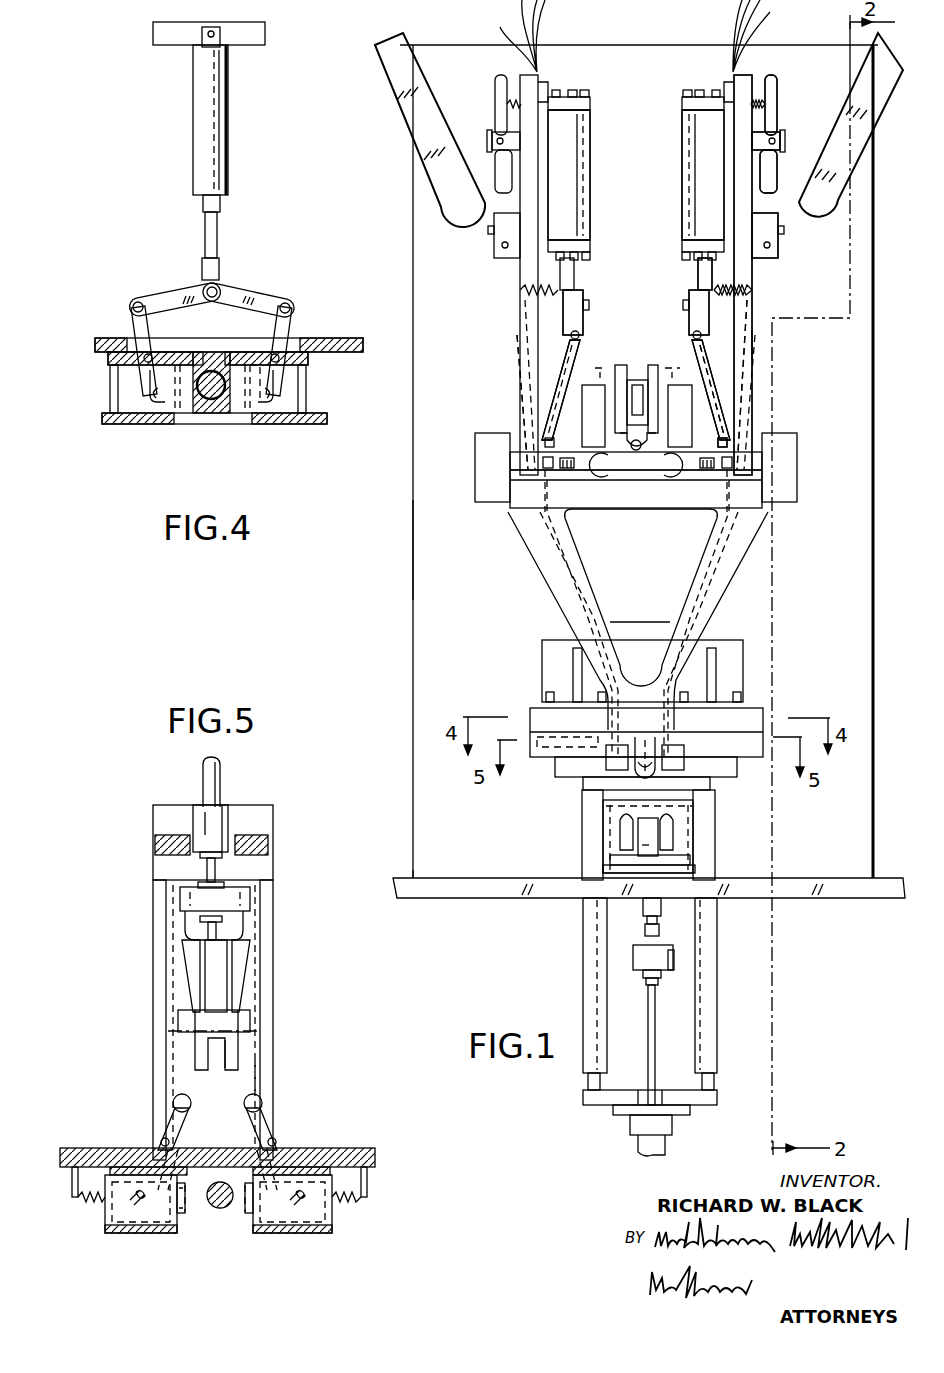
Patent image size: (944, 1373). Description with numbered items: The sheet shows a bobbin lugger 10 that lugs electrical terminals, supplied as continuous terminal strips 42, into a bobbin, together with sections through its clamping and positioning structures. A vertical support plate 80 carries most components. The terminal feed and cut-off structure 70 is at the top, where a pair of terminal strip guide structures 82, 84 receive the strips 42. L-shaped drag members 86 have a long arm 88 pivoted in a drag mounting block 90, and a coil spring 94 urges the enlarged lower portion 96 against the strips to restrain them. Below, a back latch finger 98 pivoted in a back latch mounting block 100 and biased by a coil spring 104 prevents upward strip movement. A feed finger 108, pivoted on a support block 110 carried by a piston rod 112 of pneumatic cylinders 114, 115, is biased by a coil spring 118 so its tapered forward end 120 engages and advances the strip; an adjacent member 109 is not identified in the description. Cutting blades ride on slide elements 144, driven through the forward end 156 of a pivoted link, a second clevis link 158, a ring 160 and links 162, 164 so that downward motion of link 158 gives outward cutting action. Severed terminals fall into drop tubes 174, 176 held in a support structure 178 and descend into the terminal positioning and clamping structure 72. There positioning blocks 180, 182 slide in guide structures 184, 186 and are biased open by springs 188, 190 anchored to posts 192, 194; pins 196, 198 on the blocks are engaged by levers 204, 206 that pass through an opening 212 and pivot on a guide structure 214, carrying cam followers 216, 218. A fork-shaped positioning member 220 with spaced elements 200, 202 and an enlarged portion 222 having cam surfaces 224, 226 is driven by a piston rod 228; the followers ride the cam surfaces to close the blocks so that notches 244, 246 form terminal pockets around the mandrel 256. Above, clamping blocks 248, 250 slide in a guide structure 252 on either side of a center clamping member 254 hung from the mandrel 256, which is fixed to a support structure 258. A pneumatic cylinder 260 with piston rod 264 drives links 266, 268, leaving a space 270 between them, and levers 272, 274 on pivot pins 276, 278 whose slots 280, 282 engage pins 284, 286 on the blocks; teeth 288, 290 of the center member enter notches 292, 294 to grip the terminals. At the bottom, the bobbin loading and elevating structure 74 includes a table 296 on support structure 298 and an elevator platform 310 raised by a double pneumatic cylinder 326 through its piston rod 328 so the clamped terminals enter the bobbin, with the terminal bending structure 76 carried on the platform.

In FIG. 1, the bobbin lugger 10 is at (472, 958).
In FIG. 1, the terminal strip 42 is at (532, 24).
In FIG. 1, the terminal feed and cut-off structure 70 is at (518, 408).
In FIG. 1, the terminal positioning and clamping structure 72 is at (538, 700).
In FIG. 1, the bobbin loading and elevating structure 74 is at (718, 870).
In FIG. 1, the terminal bending structure 76 is at (680, 818).
In FIG. 1, the vertical support plate 80 is at (420, 558).
In FIG. 1, the terminal strip guide structure 82 is at (520, 335).
In FIG. 1, the terminal strip guide structure 84 is at (760, 343).
In FIG. 1, the terminal drag member 86 is at (782, 98).
In FIG. 1, the long arm 88 is at (778, 122).
In FIG. 1, the drag mounting block 90 is at (780, 148).
In FIG. 1, the coil spring 94 is at (760, 100).
In FIG. 1, the enlarged lower portion 96 is at (745, 183).
In FIG. 1, the back latch finger 98 is at (762, 278).
In FIG. 1, the back latch mounting block 100 is at (780, 242).
In FIG. 1, the coil spring 104 is at (762, 304).
In FIG. 1, the feed finger 108 is at (703, 356).
In FIG. 1, the link 109 is at (562, 370).
In FIG. 1, the support block 110 is at (692, 318).
In FIG. 1, the piston rod 112 is at (693, 275).
In FIG. 1, the pneumatic cylinder 114 is at (683, 160).
In FIG. 1, the pneumatic cylinder 115 is at (582, 125).
In FIG. 1, the coil spring 118 is at (744, 400).
In FIG. 1, the forward end 120 is at (738, 433).
In FIG. 1, the slide element 144 is at (595, 468).
In FIG. 1, the forward end 156 is at (636, 368).
In FIG. 1, the second clevis link 158 is at (598, 345).
In FIG. 1, the ring 160 is at (623, 442).
In FIG. 1, the link 162 is at (655, 470).
In FIG. 1, the link 164 is at (641, 442).
In FIG. 1, the drop tube 174 is at (700, 592).
In FIG. 1, the drop tube 176 is at (570, 585).
In FIG. 1, the support structure 178 is at (750, 550).
In FIG. 5, the positioning block 180 is at (181, 1215).
In FIG. 5, the positioning block 182 is at (262, 1235).
In FIG. 5, the guide structure 184 is at (112, 1232).
In FIG. 5, the guide structure 186 is at (322, 1234).
In FIG. 5, the spring 188 is at (90, 1202).
In FIG. 5, the spring 190 is at (355, 1200).
In FIG. 5, the post 192 is at (72, 1185).
In FIG. 5, the post 194 is at (368, 1180).
In FIG. 5, the pin 196 is at (140, 1212).
In FIG. 5, the pin 198 is at (310, 1202).
In FIG. 5, the spaced apart element 200 is at (196, 1052).
In FIG. 5, the spaced apart element 202 is at (228, 1075).
In FIG. 5, the lever 204 is at (168, 1130).
In FIG. 5, the lever 206 is at (266, 1132).
In FIG. 5, the opening 212 is at (302, 1153).
In FIG. 5, the guide structure 214 is at (266, 1022).
In FIG. 5, the cam follower 216 is at (176, 1098).
In FIG. 5, the cam follower 218 is at (294, 1077).
In FIG. 5, the fork-shaped positioning member 220 is at (240, 1052).
In FIG. 5, the enlarged portion 222 is at (240, 978).
In FIG. 5, the cam surface 224 is at (188, 978).
In FIG. 5, the cam surface 226 is at (246, 1002).
In FIG. 5, the piston rod 228 is at (216, 872).
In FIG. 5, the notch 244 is at (185, 1215).
In FIG. 5, the notch 246 is at (250, 1215).
In FIG. 4, the clamping block 248 is at (170, 415).
In FIG. 4, the clamping block 250 is at (246, 416).
In FIG. 4, the guide structure 252 is at (108, 428).
In FIG. 4, the center clamping member 254 is at (226, 416).
In FIG. 1, the mandrel 256 is at (660, 775).
In FIG. 4, the mandrel 256 is at (211, 400).
In FIG. 5, the mandrel 256 is at (214, 1210).
In FIG. 1, the support structure 258 is at (700, 730).
In FIG. 4, the pneumatic cylinder 260 is at (228, 136).
In FIG. 4, the piston rod 264 is at (220, 232).
In FIG. 4, the link 266 is at (180, 290).
In FIG. 4, the link 268 is at (270, 298).
In FIG. 4, the space 270 is at (242, 290).
In FIG. 4, the lever 272 is at (132, 322).
In FIG. 4, the lever 274 is at (294, 332).
In FIG. 4, the pivot pin 276 is at (142, 360).
In FIG. 4, the pivot pin 278 is at (280, 372).
In FIG. 4, the slot 280 is at (110, 418).
In FIG. 4, the slot 282 is at (302, 415).
In FIG. 4, the pin 284 is at (148, 386).
In FIG. 4, the pin 286 is at (282, 388).
In FIG. 4, the tooth 288 is at (190, 416).
In FIG. 4, the tooth 290 is at (252, 416).
In FIG. 4, the notch 292 is at (180, 354).
In FIG. 4, the notch 294 is at (240, 354).
In FIG. 1, the table 296 is at (540, 900).
In FIG. 1, the support structure 298 is at (712, 1000).
In FIG. 1, the elevator platform 310 is at (690, 862).
In FIG. 1, the pneumatic cylinder 326 is at (667, 1145).
In FIG. 1, the piston rod 328 is at (657, 1043).